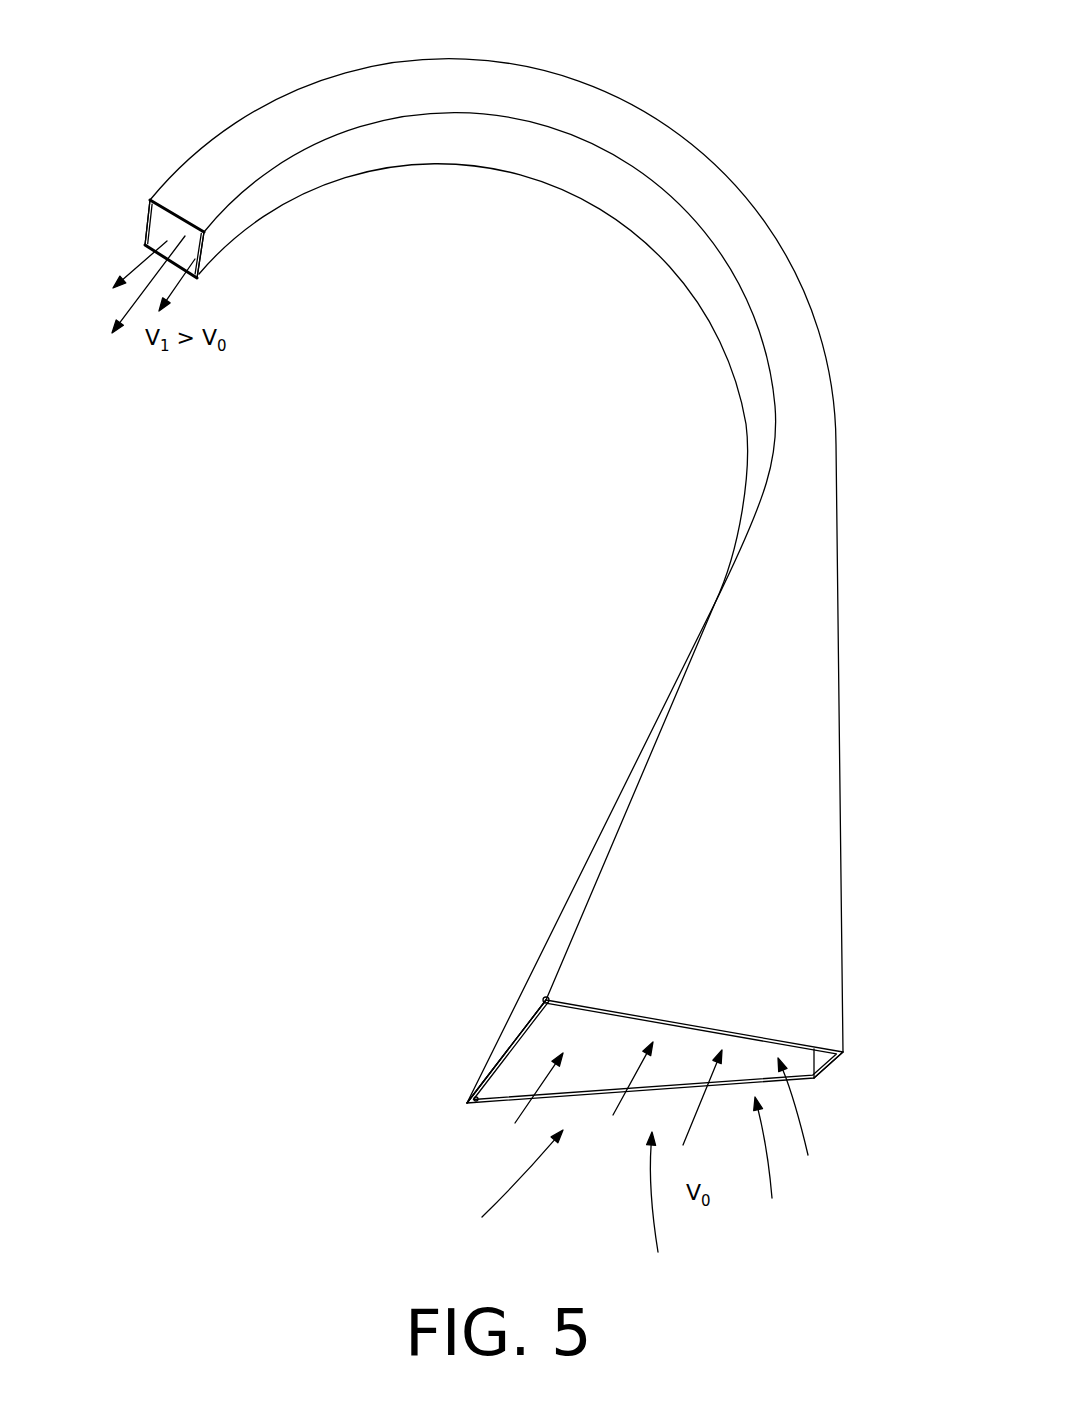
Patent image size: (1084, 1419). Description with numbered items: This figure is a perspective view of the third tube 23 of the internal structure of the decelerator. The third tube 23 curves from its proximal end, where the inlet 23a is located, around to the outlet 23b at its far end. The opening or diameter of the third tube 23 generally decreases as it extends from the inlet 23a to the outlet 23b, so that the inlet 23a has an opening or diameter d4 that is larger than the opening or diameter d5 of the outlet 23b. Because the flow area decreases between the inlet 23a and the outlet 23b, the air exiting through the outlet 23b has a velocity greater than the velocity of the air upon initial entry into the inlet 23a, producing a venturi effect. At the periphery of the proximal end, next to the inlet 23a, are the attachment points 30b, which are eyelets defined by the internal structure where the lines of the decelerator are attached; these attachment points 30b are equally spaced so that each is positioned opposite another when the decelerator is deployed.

The third tube 23 is at (610, 104).
The inlet 23a is at (805, 1081).
The outlet 23b is at (175, 233).
The attachment points 30b is at (543, 997).
The diameter of the inlet d4 is at (487, 1053).
The diameter of the outlet d5 is at (130, 215).